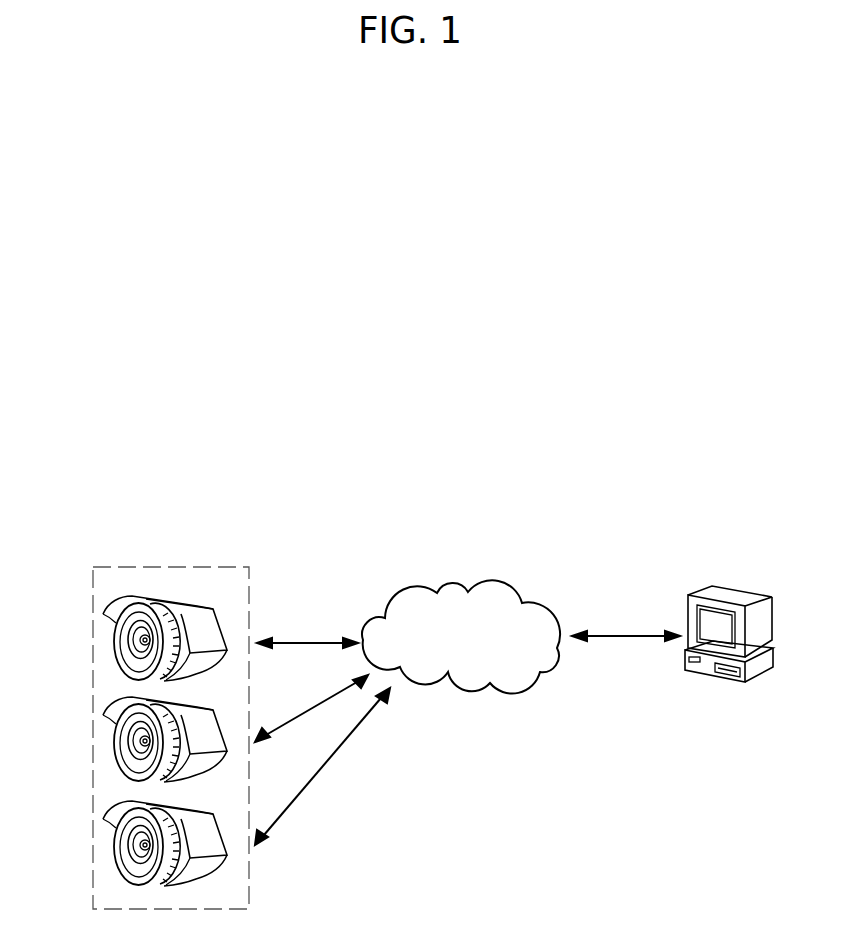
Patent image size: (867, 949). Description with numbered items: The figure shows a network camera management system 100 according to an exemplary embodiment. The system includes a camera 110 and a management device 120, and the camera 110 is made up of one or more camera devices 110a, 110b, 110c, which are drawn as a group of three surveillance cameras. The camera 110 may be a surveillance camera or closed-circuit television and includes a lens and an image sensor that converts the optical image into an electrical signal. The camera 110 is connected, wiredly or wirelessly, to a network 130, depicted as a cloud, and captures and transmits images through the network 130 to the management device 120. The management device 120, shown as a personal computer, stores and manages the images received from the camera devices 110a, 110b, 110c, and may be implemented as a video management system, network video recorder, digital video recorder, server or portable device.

The network camera management system 100 is at (621, 513).
The camera 110 is at (233, 566).
The camera device 110a is at (113, 642).
The camera device 110b is at (113, 744).
The camera device 110c is at (113, 847).
The management device 120 is at (731, 590).
The network 130 is at (457, 578).